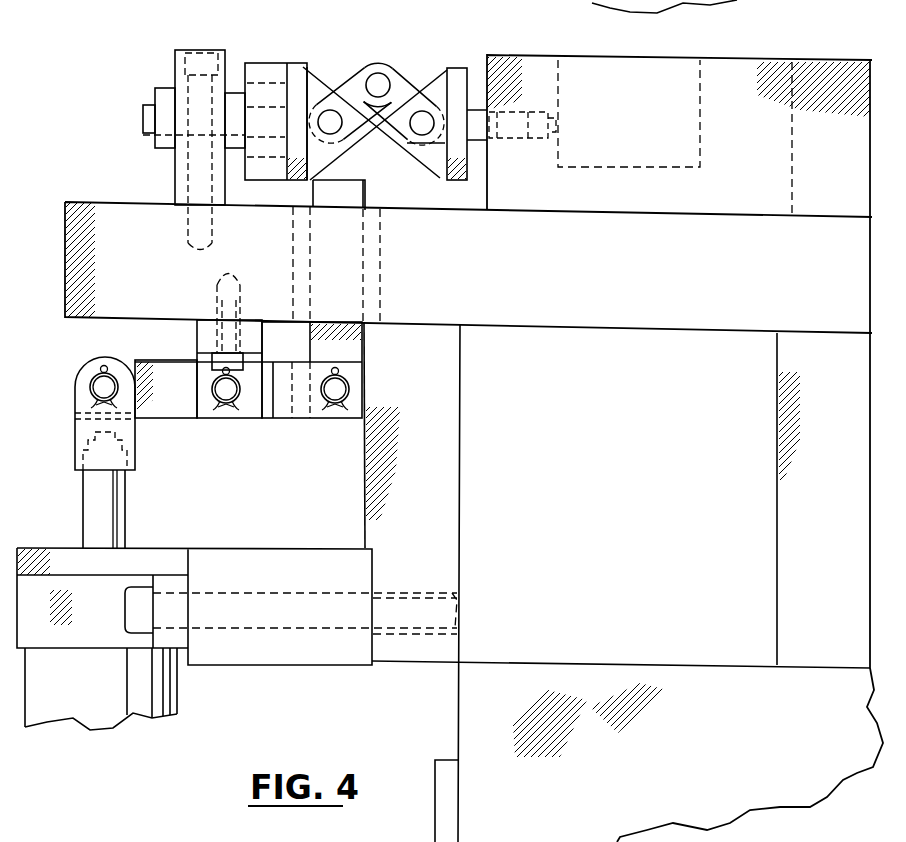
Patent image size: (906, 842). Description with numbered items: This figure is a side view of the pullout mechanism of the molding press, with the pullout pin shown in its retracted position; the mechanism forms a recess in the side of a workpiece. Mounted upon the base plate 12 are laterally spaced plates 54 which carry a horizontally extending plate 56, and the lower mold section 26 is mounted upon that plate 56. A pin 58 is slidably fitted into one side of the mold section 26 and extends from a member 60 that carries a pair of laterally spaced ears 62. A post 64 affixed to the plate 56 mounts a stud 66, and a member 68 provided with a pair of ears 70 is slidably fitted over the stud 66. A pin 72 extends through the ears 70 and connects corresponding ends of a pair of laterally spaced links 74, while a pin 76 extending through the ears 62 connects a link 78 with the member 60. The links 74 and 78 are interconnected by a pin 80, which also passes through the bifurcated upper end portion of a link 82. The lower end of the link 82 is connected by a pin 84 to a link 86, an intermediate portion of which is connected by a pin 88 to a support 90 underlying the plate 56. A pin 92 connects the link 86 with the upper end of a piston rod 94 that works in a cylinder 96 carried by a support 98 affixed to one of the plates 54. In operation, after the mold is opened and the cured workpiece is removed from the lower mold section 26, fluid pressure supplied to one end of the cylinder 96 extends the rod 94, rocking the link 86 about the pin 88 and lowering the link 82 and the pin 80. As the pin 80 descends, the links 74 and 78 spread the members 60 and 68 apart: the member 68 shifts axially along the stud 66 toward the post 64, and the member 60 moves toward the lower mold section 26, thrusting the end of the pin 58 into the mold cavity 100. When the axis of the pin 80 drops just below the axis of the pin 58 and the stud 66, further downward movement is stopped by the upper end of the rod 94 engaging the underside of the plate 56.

The base plate 12 is at (837, 765).
The lower mold section 26 is at (728, 58).
The plates 54 is at (779, 435).
The plate 56 is at (586, 305).
The pin 58 is at (517, 110).
The member 60 is at (458, 78).
The ears 62 is at (440, 68).
The post 64 is at (175, 65).
The stud 66 is at (237, 93).
The member 68 is at (277, 63).
The ears 70 is at (317, 83).
The pin 72 is at (327, 127).
The links 74 is at (353, 67).
The pin 76 is at (427, 133).
The link 78 is at (390, 128).
The pin 80 is at (380, 83).
The link 82 is at (352, 290).
The pin 84 is at (340, 392).
The link 86 is at (166, 420).
The pin 88 is at (228, 392).
The support 90 is at (197, 337).
The pin 92 is at (100, 386).
The piston rod 94 is at (82, 498).
The cylinder 96 is at (72, 697).
The support 98 is at (217, 645).
The mold cavity 100 is at (700, 100).